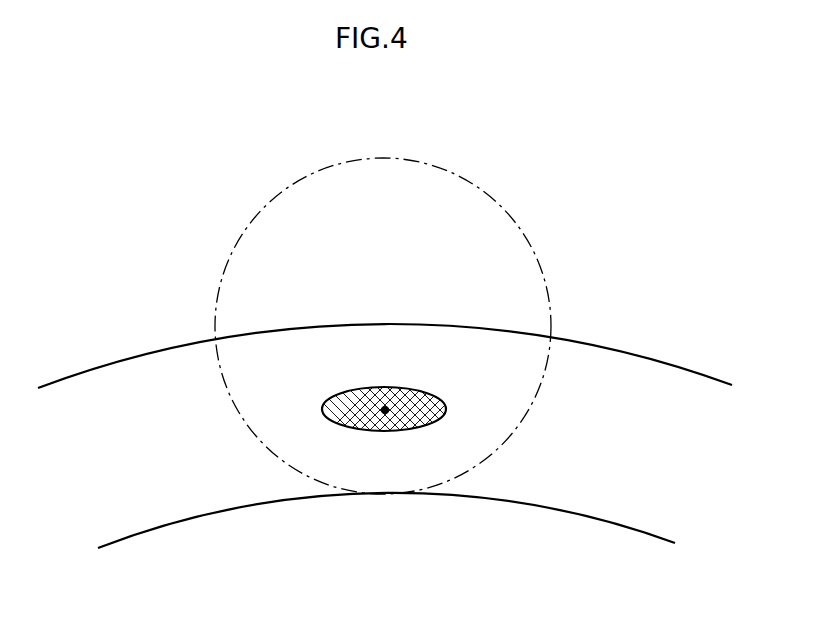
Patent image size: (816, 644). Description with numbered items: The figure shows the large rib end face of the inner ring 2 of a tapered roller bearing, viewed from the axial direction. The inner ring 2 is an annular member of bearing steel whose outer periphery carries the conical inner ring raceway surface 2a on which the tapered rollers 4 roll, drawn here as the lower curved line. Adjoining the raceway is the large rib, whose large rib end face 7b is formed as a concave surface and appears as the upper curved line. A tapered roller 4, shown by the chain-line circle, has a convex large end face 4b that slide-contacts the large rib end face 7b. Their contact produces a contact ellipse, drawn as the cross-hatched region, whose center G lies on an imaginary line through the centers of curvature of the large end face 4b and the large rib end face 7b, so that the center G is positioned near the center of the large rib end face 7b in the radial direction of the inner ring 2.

The inner ring 2 is at (385, 436).
The inner ring raceway surface 2a is at (553, 509).
The tapered roller 4 is at (377, 302).
The large end face 4b is at (493, 230).
The large rib end face 7b is at (605, 367).
The center of contact ellipse G is at (387, 414).